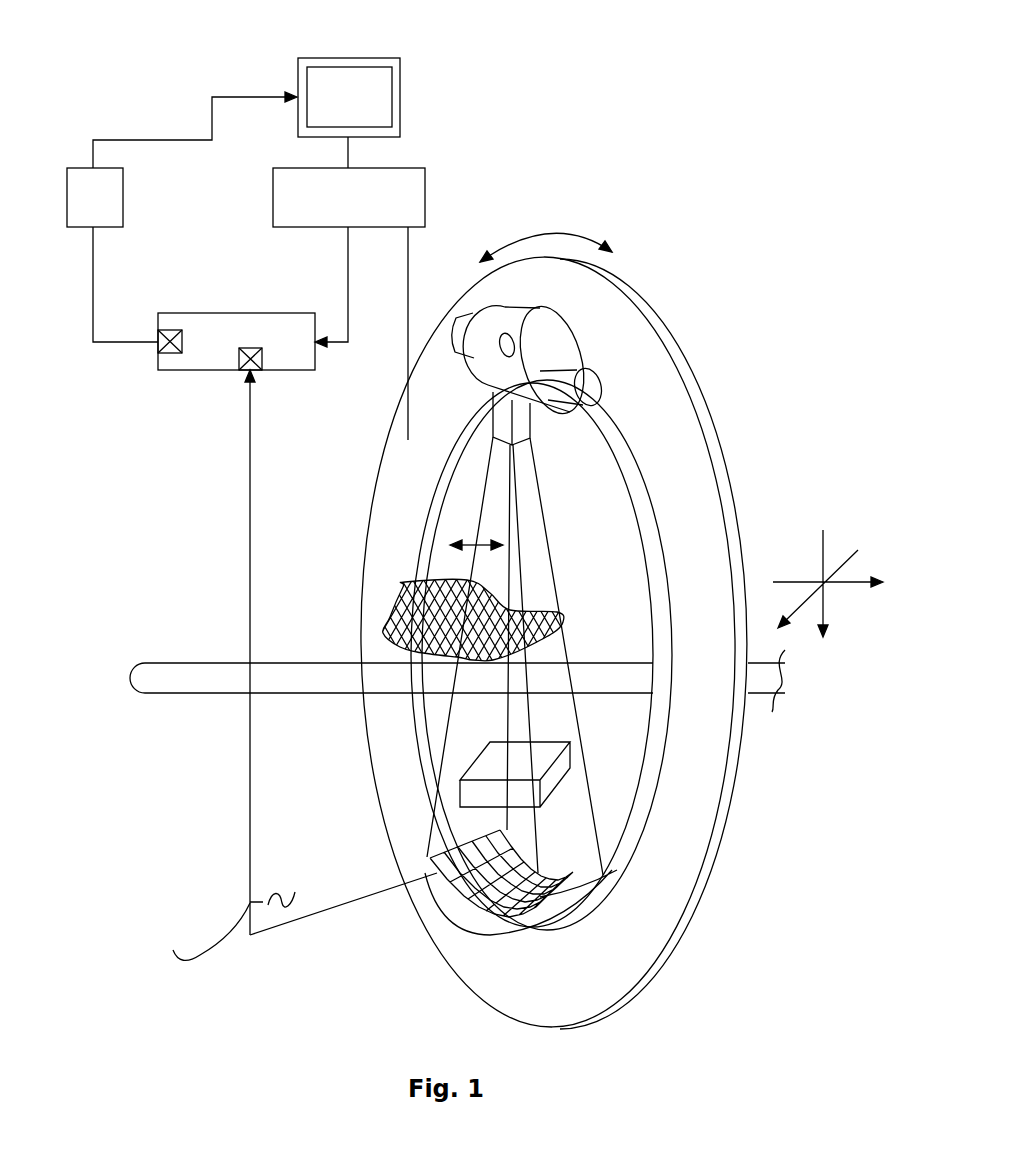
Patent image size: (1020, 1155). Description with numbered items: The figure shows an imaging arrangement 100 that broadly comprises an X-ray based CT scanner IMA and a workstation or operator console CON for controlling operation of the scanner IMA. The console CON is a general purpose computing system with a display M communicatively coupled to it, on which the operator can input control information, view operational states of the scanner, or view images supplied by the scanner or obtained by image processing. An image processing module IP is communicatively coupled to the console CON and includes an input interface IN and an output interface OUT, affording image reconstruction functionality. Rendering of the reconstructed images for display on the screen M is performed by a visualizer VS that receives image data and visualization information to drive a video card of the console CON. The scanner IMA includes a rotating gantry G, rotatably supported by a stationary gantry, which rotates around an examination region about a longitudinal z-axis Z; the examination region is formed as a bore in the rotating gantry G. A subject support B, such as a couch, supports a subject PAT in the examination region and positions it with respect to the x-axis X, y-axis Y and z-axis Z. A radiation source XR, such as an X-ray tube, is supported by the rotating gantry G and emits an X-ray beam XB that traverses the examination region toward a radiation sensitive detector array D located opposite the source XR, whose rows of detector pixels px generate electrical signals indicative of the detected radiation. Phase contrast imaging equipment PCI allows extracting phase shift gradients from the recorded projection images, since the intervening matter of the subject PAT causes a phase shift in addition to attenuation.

The imaging arrangement 100 is at (172, 88).
The display M is at (382, 100).
The operator console CON is at (408, 207).
The visualizer VS is at (88, 212).
The image processing module IP is at (302, 362).
The output interface OUT is at (155, 352).
The input interface IN is at (238, 362).
The X-ray based CT scanner IMA is at (650, 190).
The radiation source XR is at (558, 318).
The rotating gantry G is at (673, 337).
The X-ray beam XB is at (533, 573).
The z-axis Z is at (666, 583).
The x-axis X is at (781, 600).
The y-axis Y is at (844, 632).
The subject PAT is at (397, 595).
The subject support B is at (162, 682).
The phase contrast imaging equipment PCI is at (570, 747).
The detector pixels px is at (437, 872).
The radiation sensitive detector array D is at (442, 910).